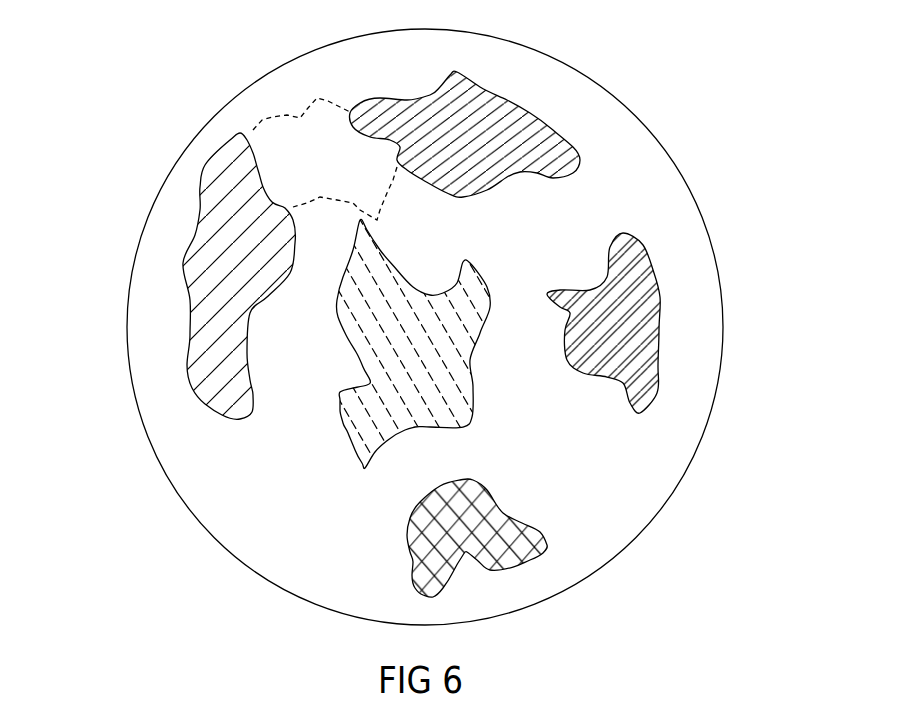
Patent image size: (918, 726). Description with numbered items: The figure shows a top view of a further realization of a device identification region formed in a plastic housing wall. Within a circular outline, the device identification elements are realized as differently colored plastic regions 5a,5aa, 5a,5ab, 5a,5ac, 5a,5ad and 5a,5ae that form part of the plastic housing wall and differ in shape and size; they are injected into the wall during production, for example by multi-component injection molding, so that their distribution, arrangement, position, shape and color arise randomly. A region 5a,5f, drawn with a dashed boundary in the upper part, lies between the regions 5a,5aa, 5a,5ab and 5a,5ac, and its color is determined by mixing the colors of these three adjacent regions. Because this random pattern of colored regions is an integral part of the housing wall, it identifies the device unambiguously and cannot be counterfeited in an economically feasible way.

The device identification element / differently colored plastic region 5a,5aa is at (165, 276).
The device identification element / mixed-color plastic region 5a,5f is at (288, 114).
The device identification element / differently colored plastic region 5a,5ac is at (516, 103).
The device identification element / differently colored plastic region 5a,5ab is at (298, 427).
The device identification element / differently colored plastic region 5a,5ad is at (682, 295).
The device identification element / differently colored plastic region 5a,5ae is at (545, 570).